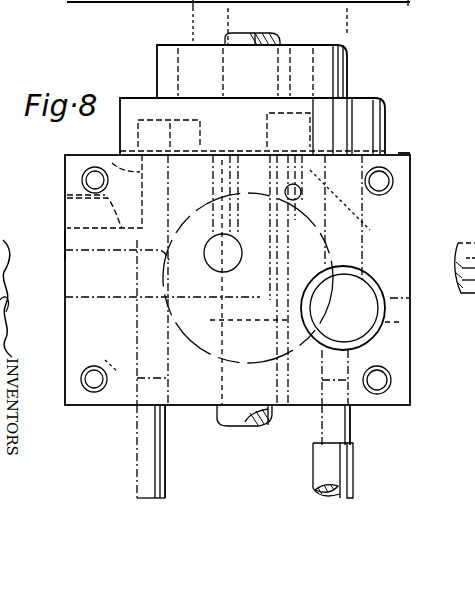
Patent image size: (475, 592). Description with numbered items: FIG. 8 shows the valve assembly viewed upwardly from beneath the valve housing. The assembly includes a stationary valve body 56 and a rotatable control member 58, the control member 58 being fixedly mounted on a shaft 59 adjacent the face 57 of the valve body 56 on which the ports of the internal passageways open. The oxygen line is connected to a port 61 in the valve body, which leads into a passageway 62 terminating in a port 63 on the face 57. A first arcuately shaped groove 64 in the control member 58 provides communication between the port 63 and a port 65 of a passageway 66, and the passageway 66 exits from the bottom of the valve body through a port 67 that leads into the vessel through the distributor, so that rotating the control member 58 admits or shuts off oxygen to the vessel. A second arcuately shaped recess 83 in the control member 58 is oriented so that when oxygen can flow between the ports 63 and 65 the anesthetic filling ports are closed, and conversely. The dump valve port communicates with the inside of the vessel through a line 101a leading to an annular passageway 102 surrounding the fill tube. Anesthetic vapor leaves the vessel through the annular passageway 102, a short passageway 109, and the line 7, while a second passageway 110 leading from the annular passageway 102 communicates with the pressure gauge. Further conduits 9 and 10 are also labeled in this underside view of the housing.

The line 7 is at (355, 472).
The section line 9 is at (212, 23).
The section line 10 is at (328, 22).
The stationary valve body 56 is at (410, 197).
The face 57 is at (410, 153).
The rotatable control member 58 is at (147, 98).
The shaft 59 is at (272, 36).
The port 61 is at (68, 243).
The passageway 62 is at (67, 195).
The port 63 is at (117, 158).
The first arcuately shaped groove 64 is at (200, 125).
The port 65 is at (217, 178).
The passageway 66 is at (174, 25).
The port 67 is at (205, 258).
The second arcuately shaped recess 83 is at (352, 100).
The line 101a is at (383, 298).
The annular passageway 102 is at (386, 322).
The short passageway 109 is at (352, 425).
The second passageway 110 is at (167, 458).